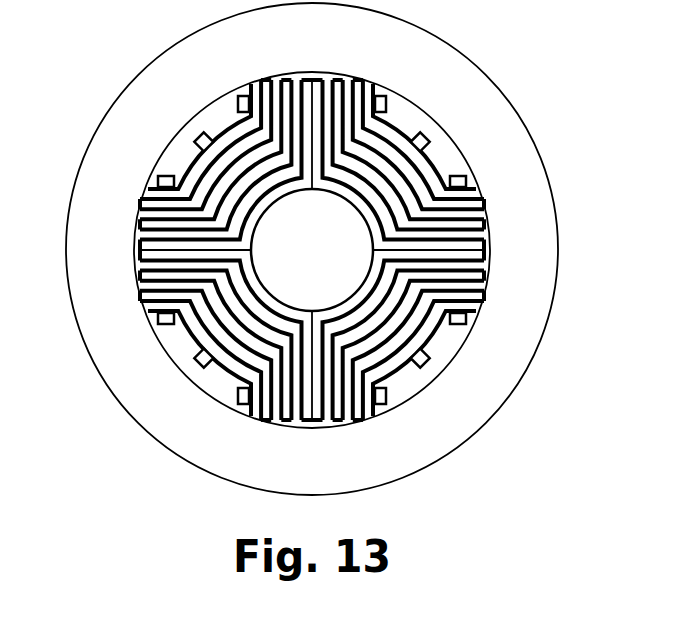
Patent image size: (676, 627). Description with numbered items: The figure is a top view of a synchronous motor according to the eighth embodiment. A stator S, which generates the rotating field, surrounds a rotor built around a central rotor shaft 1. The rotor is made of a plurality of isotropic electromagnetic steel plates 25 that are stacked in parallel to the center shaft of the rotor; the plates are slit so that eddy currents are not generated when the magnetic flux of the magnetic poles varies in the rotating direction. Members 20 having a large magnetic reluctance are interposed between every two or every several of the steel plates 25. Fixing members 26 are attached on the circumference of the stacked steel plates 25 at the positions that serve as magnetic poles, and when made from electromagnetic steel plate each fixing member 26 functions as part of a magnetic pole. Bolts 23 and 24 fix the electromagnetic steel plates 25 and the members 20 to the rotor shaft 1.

The rotor shaft 1 is at (343, 223).
The stator S is at (470, 68).
The member having a large magnetic reluctance 20 is at (268, 82).
The bolt 23 is at (197, 137).
The bolt 24 is at (239, 98).
The isotropic electromagnetic steel plate 25 is at (298, 80).
The fixing member 26 is at (247, 88).